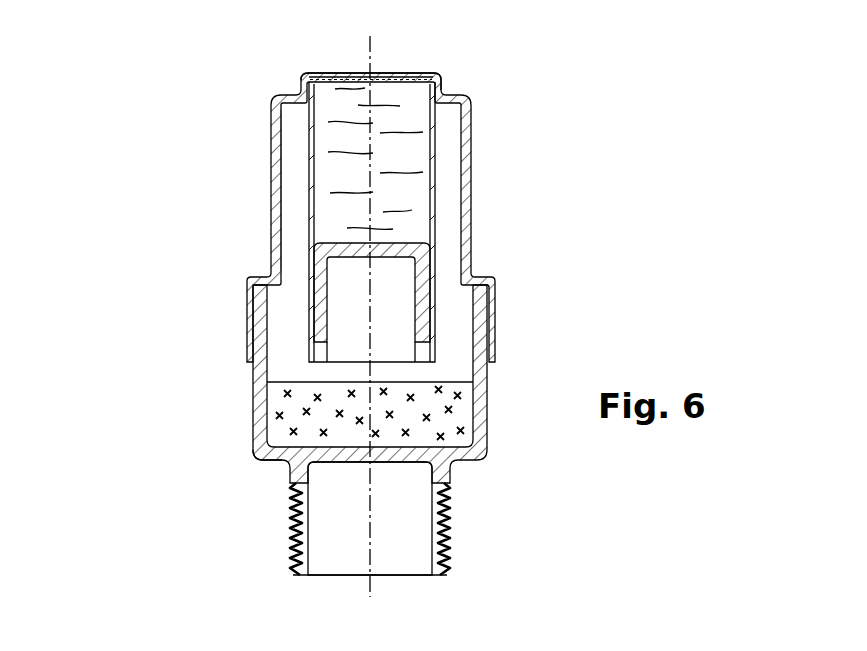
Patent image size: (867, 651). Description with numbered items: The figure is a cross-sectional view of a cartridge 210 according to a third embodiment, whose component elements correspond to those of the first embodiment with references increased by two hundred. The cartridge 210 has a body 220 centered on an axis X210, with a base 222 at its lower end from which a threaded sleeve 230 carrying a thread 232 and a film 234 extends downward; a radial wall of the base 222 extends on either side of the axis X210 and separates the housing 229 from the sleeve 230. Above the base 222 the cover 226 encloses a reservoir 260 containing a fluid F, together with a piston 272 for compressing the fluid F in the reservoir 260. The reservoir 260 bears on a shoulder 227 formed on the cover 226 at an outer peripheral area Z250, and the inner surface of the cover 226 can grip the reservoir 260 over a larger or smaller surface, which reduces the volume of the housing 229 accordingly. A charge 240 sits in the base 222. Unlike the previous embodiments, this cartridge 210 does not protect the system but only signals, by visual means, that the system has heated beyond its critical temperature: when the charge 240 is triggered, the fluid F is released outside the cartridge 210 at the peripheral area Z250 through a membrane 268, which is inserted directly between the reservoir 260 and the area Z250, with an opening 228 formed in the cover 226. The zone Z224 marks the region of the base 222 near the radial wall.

The cartridge 210 is at (120, 143).
The axis X210 is at (372, 304).
The cover 226 is at (273, 208).
The housing 229 is at (291, 163).
The opening 228 is at (390, 77).
The membrane 268 is at (340, 82).
The shoulder 227 is at (318, 78).
The area Z250 is at (432, 54).
The fluid F is at (403, 157).
The reservoir 260 is at (433, 182).
The piston 272 is at (432, 243).
The body 220 is at (192, 370).
The base 222 is at (480, 387).
The charge 240 is at (285, 409).
The zone of body bottom Z224 is at (272, 463).
The threaded sleeve 230 is at (437, 575).
The thread 232 is at (452, 553).
The film 234 is at (450, 530).